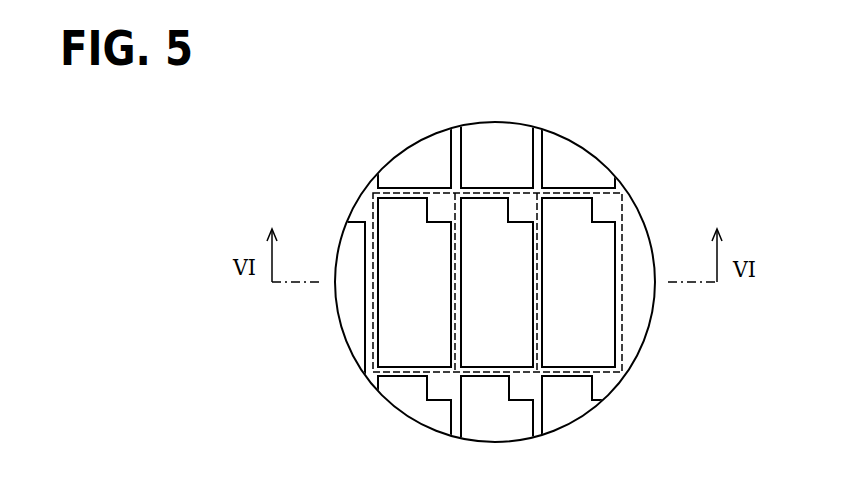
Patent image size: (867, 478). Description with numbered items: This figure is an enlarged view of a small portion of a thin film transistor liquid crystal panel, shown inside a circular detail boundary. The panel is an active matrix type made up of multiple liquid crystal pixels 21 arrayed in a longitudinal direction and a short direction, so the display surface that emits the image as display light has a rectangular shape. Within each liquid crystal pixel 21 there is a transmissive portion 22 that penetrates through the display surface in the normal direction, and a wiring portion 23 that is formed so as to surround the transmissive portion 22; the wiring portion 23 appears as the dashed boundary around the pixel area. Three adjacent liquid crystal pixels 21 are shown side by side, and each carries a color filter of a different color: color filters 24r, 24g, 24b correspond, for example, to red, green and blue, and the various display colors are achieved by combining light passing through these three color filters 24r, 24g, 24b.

The liquid crystal pixel 21 is at (395, 378).
The transmissive portion 22 is at (405, 210).
The wiring portion 23 is at (603, 203).
The color filter 24r is at (435, 305).
The color filter 24g is at (517, 305).
The color filter 24b is at (598, 305).